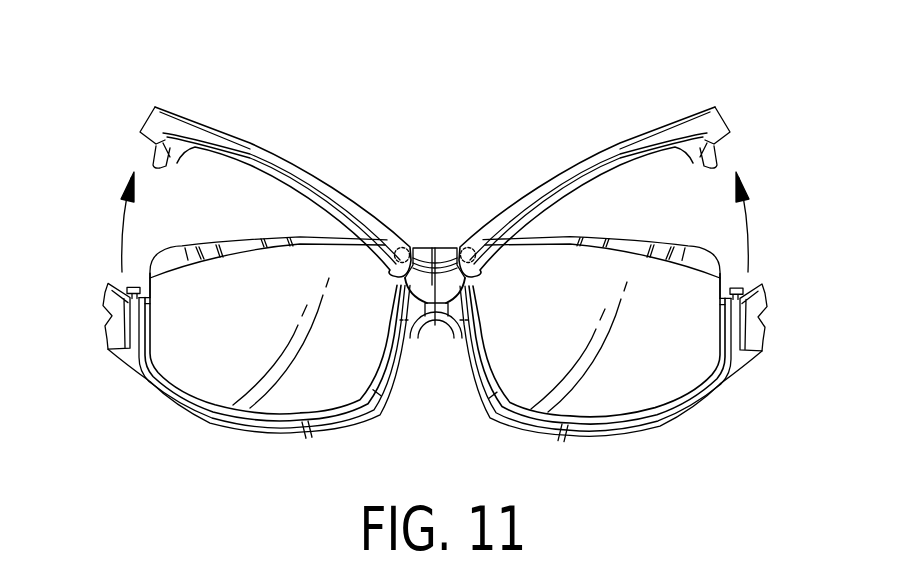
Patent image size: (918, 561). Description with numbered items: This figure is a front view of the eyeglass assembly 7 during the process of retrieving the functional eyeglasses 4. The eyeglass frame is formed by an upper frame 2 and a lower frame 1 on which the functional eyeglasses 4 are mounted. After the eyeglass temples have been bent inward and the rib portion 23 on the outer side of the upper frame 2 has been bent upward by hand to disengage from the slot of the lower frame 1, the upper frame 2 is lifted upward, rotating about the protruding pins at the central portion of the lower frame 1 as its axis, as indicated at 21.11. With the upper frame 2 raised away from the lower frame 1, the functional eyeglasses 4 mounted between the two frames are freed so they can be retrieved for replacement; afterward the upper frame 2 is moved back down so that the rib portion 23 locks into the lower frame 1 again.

The lower frame 1 is at (305, 427).
The upper frame 2 is at (263, 157).
The functional eyeglasses 4 is at (207, 367).
The eyeglass assembly 7 is at (121, 418).
The pivot of hinge 21.11 is at (408, 247).
The rib portion 23 is at (157, 165).